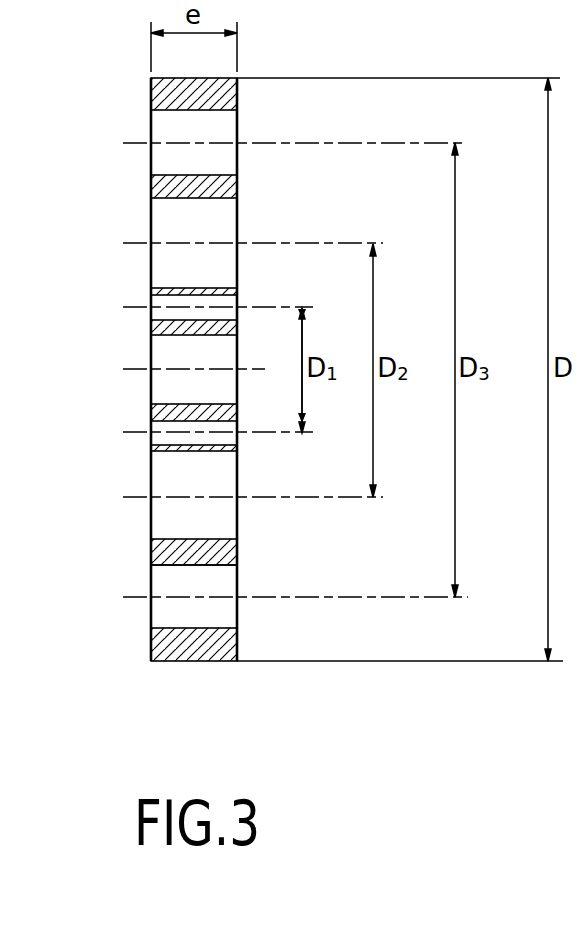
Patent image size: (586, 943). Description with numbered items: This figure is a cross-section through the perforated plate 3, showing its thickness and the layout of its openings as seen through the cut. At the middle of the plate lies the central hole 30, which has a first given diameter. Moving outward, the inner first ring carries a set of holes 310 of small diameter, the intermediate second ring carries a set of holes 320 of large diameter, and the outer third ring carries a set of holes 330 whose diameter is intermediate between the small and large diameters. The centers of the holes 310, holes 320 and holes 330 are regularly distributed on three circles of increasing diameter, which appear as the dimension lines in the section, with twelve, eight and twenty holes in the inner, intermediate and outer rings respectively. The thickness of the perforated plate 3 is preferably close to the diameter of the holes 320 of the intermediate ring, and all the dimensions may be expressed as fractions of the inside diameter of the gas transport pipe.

The perforated plate 3 is at (151, 661).
The central hole 30 is at (168, 338).
The holes of small diameter 310 is at (153, 430).
The holes of large diameter 320 is at (166, 451).
The holes of intermediate diameter 330 is at (167, 565).